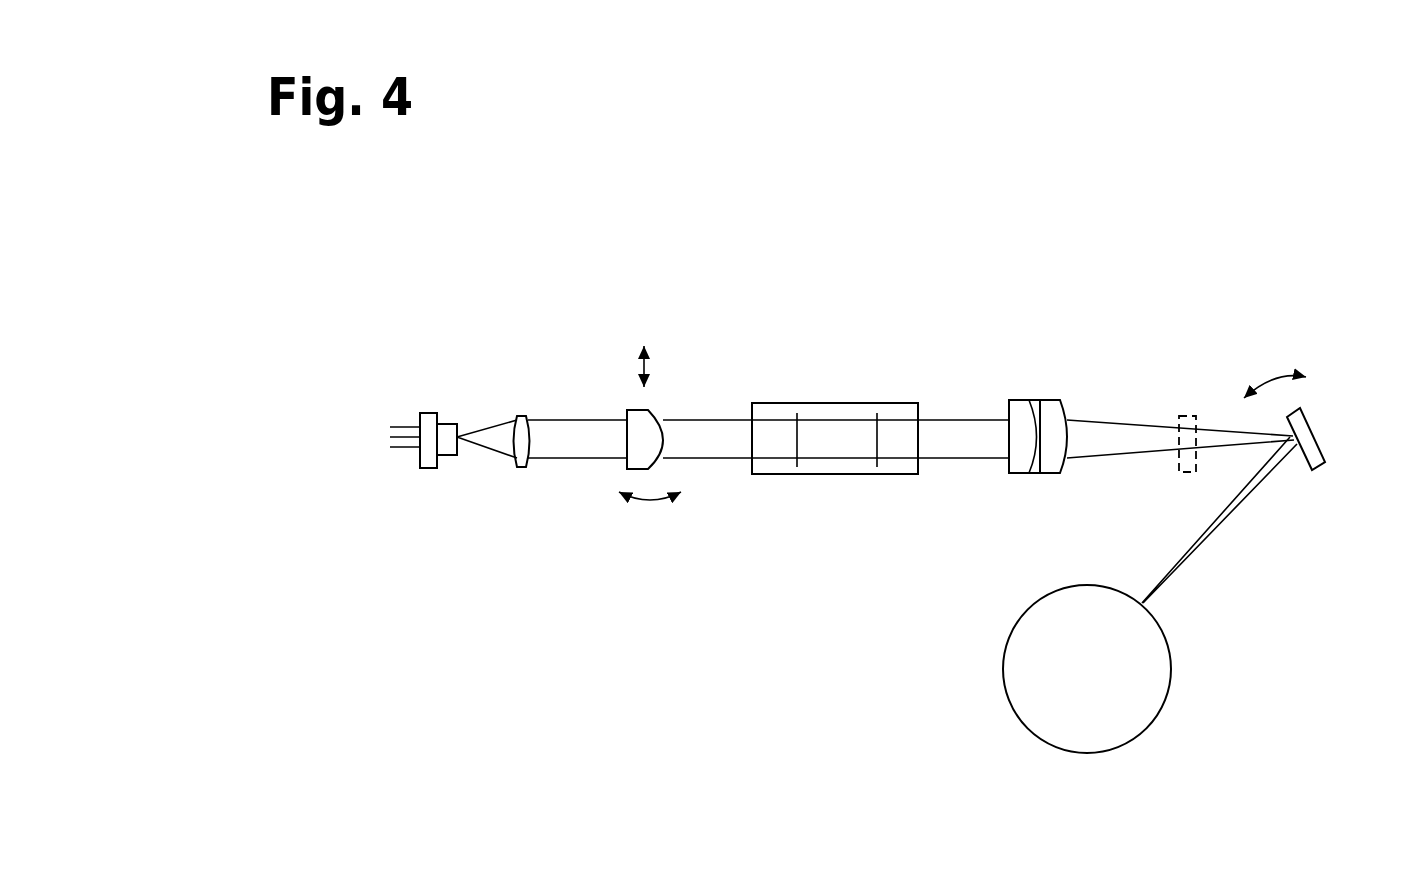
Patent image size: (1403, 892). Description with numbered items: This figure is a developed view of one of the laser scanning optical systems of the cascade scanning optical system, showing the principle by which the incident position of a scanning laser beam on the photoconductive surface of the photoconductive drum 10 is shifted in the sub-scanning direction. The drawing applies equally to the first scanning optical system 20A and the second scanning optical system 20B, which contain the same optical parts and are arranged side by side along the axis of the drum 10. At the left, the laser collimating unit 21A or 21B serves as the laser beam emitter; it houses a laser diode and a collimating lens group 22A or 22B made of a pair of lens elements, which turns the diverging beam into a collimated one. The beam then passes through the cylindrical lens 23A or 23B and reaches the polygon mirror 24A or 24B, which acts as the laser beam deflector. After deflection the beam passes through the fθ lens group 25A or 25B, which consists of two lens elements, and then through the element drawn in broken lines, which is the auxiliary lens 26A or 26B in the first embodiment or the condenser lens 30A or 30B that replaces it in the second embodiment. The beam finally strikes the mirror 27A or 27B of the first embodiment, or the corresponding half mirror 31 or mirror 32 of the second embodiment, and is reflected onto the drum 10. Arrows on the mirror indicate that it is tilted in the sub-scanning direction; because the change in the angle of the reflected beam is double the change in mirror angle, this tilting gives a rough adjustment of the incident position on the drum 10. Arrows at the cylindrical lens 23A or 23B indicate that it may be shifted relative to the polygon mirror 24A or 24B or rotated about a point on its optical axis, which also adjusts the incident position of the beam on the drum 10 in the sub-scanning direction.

The photoconductive drum 10 is at (1155, 630).
The first scanning optical system 20A is at (504, 321).
The second scanning optical system 20B is at (531, 271).
The laser collimating unit 21A is at (452, 401).
The laser collimating unit 21B is at (430, 413).
The collimating lens group 22A is at (580, 382).
The collimating lens group 22B is at (525, 418).
The cylindrical lens 23A is at (708, 420).
The cylindrical lens 23B is at (648, 413).
The polygon mirror 24A is at (851, 386).
The polygon mirror 24B is at (850, 408).
The fθ lens group 25A is at (1052, 407).
The fθ lens group 25B is at (1072, 391).
The auxiliary lens 26A is at (1224, 385).
The auxiliary lens 26B is at (1224, 385).
The condenser lens 30A is at (1224, 385).
The condenser lens 30B is at (1186, 416).
The mirror 27A is at (1320, 478).
The mirror 27B is at (1320, 478).
The half mirror 31 is at (1320, 478).
The mirror 32 is at (1310, 458).